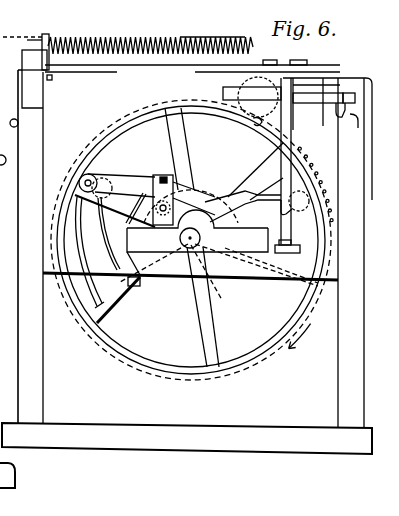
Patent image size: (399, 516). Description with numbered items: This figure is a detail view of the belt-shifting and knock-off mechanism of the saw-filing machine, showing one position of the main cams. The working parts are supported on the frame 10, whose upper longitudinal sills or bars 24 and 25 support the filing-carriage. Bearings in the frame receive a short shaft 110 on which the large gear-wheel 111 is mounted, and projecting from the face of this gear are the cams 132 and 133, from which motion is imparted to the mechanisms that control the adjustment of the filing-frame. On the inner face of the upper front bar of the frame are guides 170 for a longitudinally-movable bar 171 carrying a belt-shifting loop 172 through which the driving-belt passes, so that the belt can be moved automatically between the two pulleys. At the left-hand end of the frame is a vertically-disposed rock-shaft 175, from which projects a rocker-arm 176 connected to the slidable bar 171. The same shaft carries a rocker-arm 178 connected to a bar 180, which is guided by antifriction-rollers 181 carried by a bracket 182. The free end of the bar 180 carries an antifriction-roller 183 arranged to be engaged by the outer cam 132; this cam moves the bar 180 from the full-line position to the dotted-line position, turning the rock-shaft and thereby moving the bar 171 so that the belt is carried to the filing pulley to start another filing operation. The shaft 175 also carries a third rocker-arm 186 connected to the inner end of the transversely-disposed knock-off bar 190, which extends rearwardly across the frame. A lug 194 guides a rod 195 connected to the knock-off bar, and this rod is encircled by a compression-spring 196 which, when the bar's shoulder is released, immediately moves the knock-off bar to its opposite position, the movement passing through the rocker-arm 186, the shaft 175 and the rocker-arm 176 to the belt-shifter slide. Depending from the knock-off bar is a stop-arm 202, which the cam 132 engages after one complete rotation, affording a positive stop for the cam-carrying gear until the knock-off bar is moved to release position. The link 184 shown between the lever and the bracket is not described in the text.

The frame 10 is at (30, 404).
The longitudinal sill 24 is at (36, 96).
The longitudinal sill 25 is at (358, 84).
The short shaft 110 is at (189, 246).
The gear-wheel 111 is at (158, 360).
The outer cam 132 is at (90, 293).
The cam 133 is at (152, 319).
The guides 170 is at (339, 108).
The longitudinally-movable bar 171 is at (366, 134).
The belt-shifting loop 172 is at (223, 90).
The rock-shaft 175 is at (325, 148).
The rocker-arm 176 is at (327, 97).
The rocker-arm 178 is at (283, 206).
The bar 180 is at (246, 174).
The antifriction-rollers 181 is at (155, 251).
The bracket 182 is at (155, 177).
The antifriction-roller 183 is at (121, 169).
The link 184 is at (132, 212).
The rocker-arm 186 is at (346, 69).
The knock-off bar 190 is at (168, 85).
The lug 194 is at (68, 30).
The rod 195 is at (152, 39).
The compression-spring 196 is at (207, 39).
The stop-arm 202 is at (257, 123).